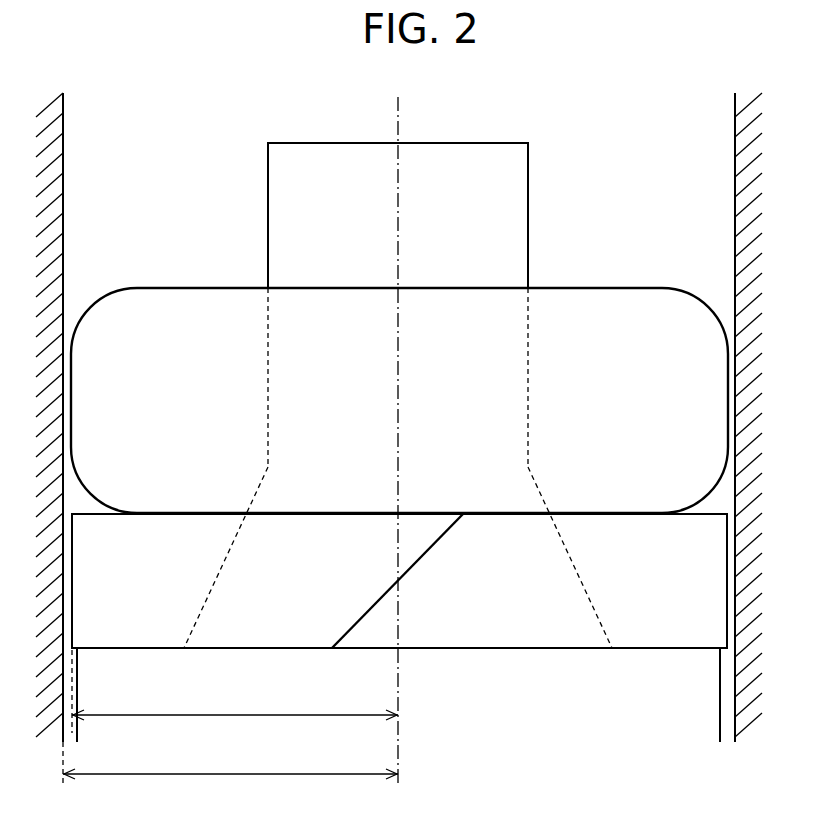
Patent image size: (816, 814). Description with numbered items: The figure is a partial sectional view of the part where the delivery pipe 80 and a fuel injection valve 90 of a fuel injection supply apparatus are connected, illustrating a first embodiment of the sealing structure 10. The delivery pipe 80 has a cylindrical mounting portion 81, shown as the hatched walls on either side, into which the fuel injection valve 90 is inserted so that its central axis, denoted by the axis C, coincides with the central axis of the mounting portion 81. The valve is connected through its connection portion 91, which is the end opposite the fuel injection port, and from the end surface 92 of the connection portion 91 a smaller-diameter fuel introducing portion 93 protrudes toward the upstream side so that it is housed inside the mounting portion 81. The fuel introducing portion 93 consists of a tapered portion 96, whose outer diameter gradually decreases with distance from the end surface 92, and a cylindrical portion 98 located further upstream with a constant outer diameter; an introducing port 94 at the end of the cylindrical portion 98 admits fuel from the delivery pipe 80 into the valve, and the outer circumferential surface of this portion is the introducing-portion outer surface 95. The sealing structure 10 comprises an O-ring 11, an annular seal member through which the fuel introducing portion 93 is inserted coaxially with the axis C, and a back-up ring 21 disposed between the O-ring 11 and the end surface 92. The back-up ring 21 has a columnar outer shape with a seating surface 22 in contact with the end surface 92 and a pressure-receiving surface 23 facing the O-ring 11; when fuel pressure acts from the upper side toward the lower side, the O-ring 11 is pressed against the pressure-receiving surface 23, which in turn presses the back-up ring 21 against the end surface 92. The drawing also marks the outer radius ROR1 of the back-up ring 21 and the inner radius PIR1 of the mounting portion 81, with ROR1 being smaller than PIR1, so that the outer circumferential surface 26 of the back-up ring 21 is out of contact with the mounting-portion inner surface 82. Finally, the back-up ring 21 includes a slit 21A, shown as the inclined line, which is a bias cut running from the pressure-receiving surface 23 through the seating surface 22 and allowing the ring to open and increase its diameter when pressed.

The sealing structure 10 is at (633, 235).
The O-ring 11 is at (198, 300).
The back-up ring 21 is at (502, 633).
The slit 21A is at (415, 565).
The seating surface 22 is at (578, 650).
The pressure-receiving surface 23 is at (578, 513).
The outer circumferential surface 26 is at (727, 572).
The delivery pipe 80 is at (123, 128).
The mounting portion 81 is at (52, 122).
The mounting-portion inner surface 82 is at (63, 158).
The fuel injection valve 90 is at (260, 127).
The connection portion 91 is at (622, 720).
The end surface 92 is at (642, 647).
The fuel introducing portion 93 is at (512, 170).
The introducing port 94 is at (443, 143).
The introducing-portion outer surface 95 is at (528, 213).
The tapered portion 96 is at (237, 575).
The cylindrical portion 98 is at (290, 400).
The axis C is at (398, 670).
The outer radius of the back-up ring ROR1 is at (233, 713).
The inner radius of the mounting portion PIR1 is at (230, 773).